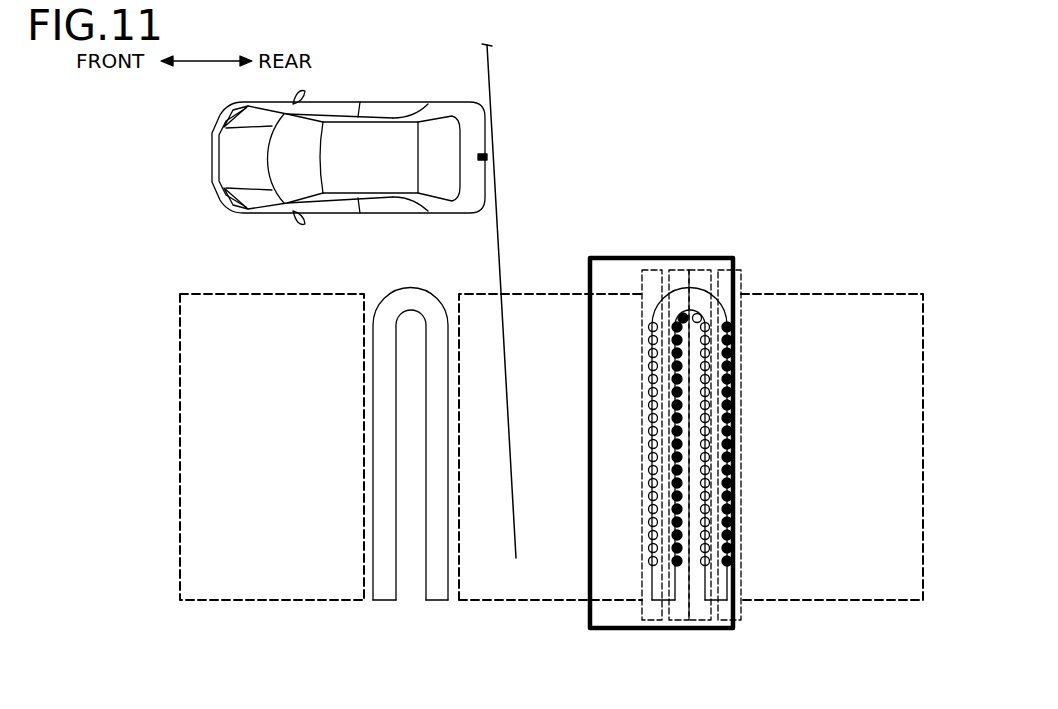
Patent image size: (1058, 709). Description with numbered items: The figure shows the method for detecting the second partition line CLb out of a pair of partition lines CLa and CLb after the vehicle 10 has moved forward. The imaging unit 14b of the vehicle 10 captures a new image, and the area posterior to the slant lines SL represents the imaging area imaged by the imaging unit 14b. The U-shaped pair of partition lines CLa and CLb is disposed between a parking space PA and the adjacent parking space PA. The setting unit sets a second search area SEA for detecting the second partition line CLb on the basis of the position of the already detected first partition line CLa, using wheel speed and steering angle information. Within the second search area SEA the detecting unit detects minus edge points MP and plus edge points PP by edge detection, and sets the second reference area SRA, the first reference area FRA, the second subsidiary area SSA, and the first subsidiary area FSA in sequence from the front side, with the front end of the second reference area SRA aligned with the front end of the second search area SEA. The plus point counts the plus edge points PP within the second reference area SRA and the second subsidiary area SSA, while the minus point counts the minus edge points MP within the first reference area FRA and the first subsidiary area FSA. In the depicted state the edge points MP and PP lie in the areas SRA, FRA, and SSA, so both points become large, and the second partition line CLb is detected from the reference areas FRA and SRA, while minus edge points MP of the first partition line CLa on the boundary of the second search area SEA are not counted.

The vehicle 10 is at (400, 101).
The imaging unit 14b is at (489, 156).
The slant lines SL is at (494, 91).
The parking space PA is at (237, 603).
The first partition line CLa is at (437, 603).
The second partition line CLb is at (384, 603).
The second search area SEA is at (626, 257).
The second reference area SRA is at (640, 603).
The first reference area FRA is at (672, 620).
The second subsidiary area SSA is at (705, 622).
The first subsidiary area FSA is at (742, 620).
The plus edge points PP is at (696, 318).
The minus edge points MP is at (684, 313).